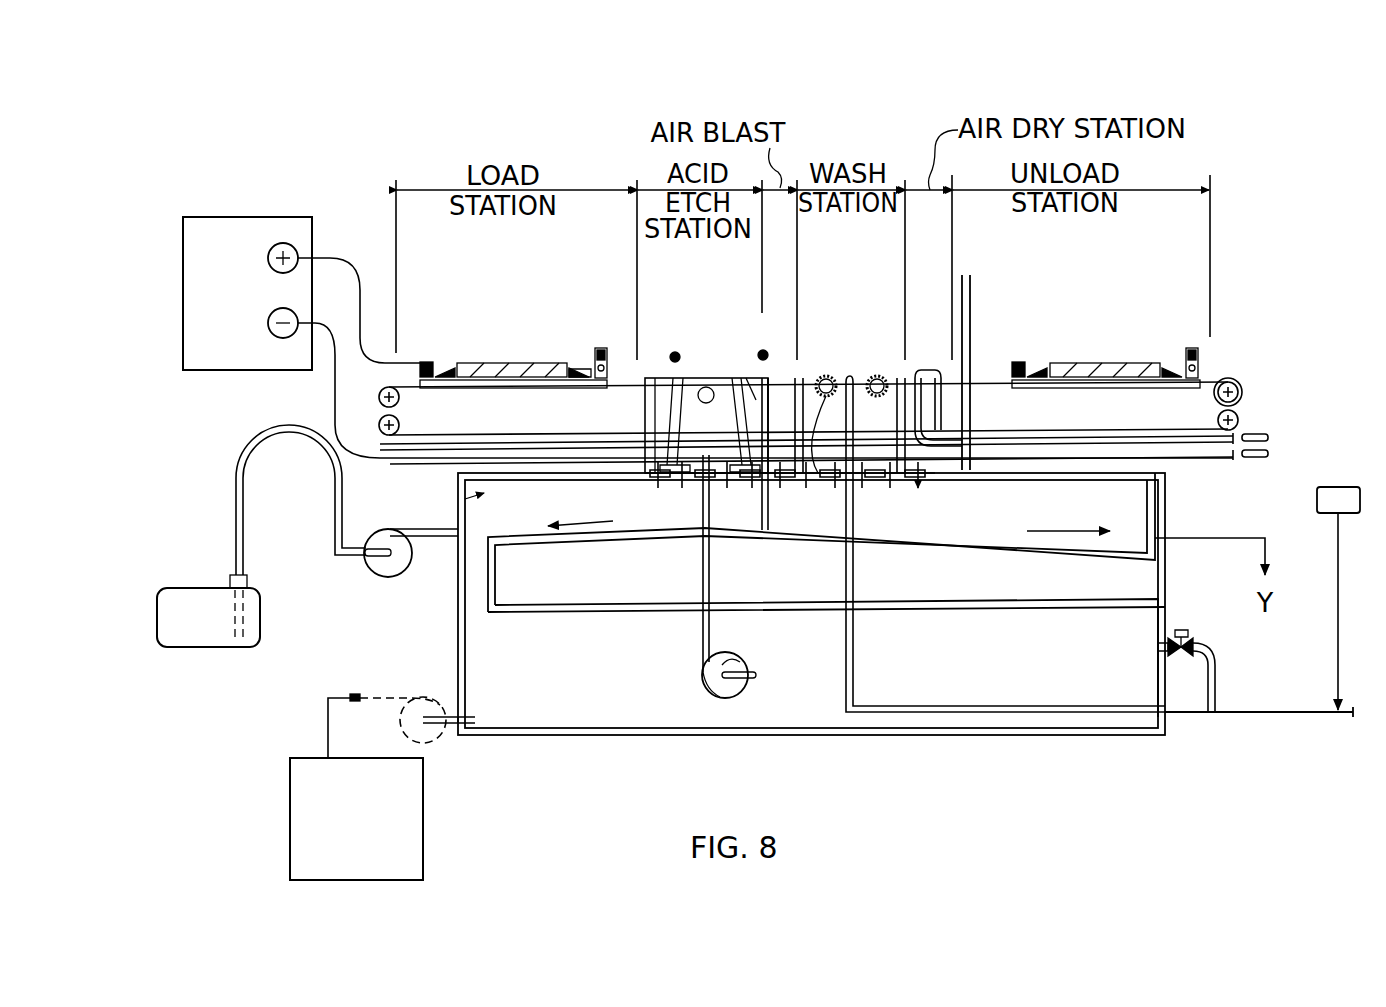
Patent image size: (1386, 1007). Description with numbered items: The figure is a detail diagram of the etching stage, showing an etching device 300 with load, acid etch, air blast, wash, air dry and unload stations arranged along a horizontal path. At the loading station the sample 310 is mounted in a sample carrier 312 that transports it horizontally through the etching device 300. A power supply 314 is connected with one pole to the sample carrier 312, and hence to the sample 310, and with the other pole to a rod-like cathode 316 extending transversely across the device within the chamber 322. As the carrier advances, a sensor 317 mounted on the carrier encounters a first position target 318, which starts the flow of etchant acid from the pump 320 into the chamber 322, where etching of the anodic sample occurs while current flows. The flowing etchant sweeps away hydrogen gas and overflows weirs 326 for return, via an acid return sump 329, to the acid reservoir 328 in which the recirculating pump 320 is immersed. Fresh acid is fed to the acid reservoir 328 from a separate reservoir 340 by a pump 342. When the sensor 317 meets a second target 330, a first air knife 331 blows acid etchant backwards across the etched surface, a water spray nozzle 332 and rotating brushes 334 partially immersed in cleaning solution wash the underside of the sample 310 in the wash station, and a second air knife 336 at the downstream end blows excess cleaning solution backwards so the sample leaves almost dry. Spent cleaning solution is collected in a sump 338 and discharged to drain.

The etching device 300 is at (1294, 294).
The sample 310 is at (518, 362).
The sample carrier 312 is at (610, 372).
The power supply 314 is at (215, 362).
The rod-like cathode 316 is at (706, 387).
The sensor 317 is at (592, 369).
The first position target 318 is at (672, 357).
The pump 320 is at (745, 658).
The chamber 322 is at (770, 376).
The weirs 326 is at (680, 420).
The acid reservoir 328 is at (563, 686).
The acid return sump 329 is at (458, 496).
The second target 330 is at (765, 352).
The first air knife 331 is at (757, 395).
The water spray nozzle 332 is at (855, 498).
The rotating brushes 334 is at (770, 498).
The second air knife 336 is at (943, 385).
The sump 338 is at (1073, 514).
The reservoir 340 is at (188, 598).
The pump 342 is at (382, 572).